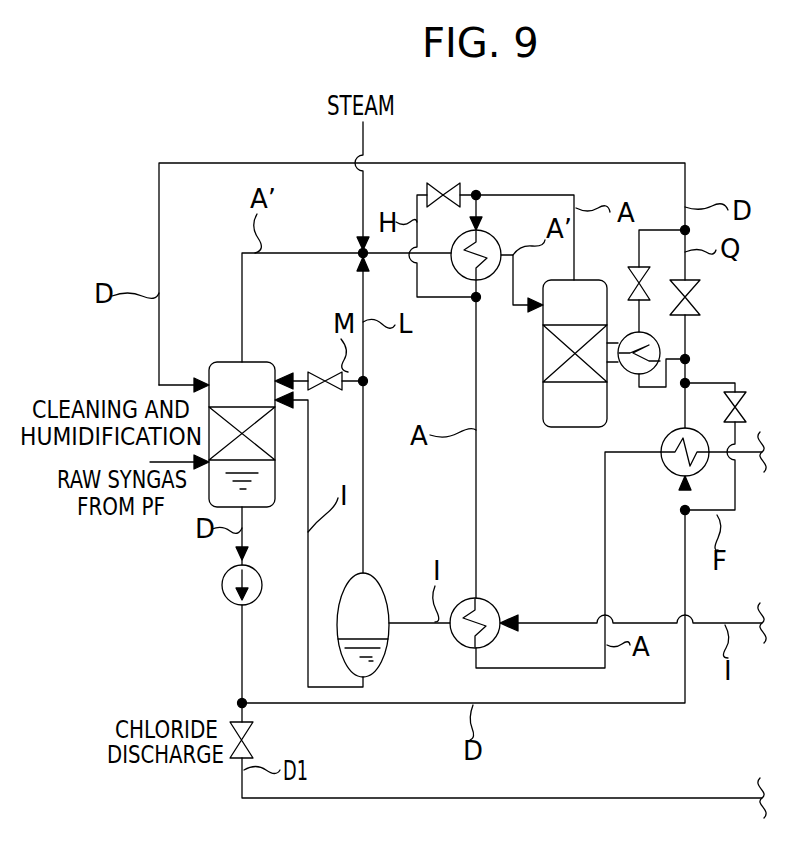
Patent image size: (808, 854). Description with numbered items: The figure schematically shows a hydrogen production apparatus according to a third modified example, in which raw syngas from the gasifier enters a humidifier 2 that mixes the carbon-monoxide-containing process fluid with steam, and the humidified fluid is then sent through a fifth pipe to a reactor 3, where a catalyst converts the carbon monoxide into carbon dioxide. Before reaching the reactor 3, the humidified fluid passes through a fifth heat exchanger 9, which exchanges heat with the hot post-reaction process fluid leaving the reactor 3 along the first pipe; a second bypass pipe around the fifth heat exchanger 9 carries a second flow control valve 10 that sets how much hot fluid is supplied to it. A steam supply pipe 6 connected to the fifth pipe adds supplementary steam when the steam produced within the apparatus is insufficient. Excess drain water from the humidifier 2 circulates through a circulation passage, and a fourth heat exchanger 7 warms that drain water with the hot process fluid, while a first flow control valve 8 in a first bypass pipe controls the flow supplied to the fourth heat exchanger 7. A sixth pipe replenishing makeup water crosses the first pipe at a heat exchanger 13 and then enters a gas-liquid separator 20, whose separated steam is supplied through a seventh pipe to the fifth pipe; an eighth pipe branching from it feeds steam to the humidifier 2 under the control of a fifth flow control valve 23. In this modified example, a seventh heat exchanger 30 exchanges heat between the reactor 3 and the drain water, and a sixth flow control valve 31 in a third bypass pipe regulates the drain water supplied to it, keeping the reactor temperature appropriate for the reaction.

The humidifier 2 is at (258, 360).
The reactor 3 is at (572, 430).
The steam supply pipe 6 is at (363, 197).
The fourth heat exchanger 7 is at (666, 470).
The first flow control valve 8 is at (736, 386).
The fifth heat exchanger 9 is at (492, 273).
The second flow control valve 10 is at (427, 190).
The heat exchanger 13 is at (498, 603).
The gas-liquid separator 20 is at (377, 572).
The fifth flow control valve 23 is at (330, 395).
The seventh heat exchanger 30 is at (641, 377).
The sixth flow control valve 31 is at (700, 299).